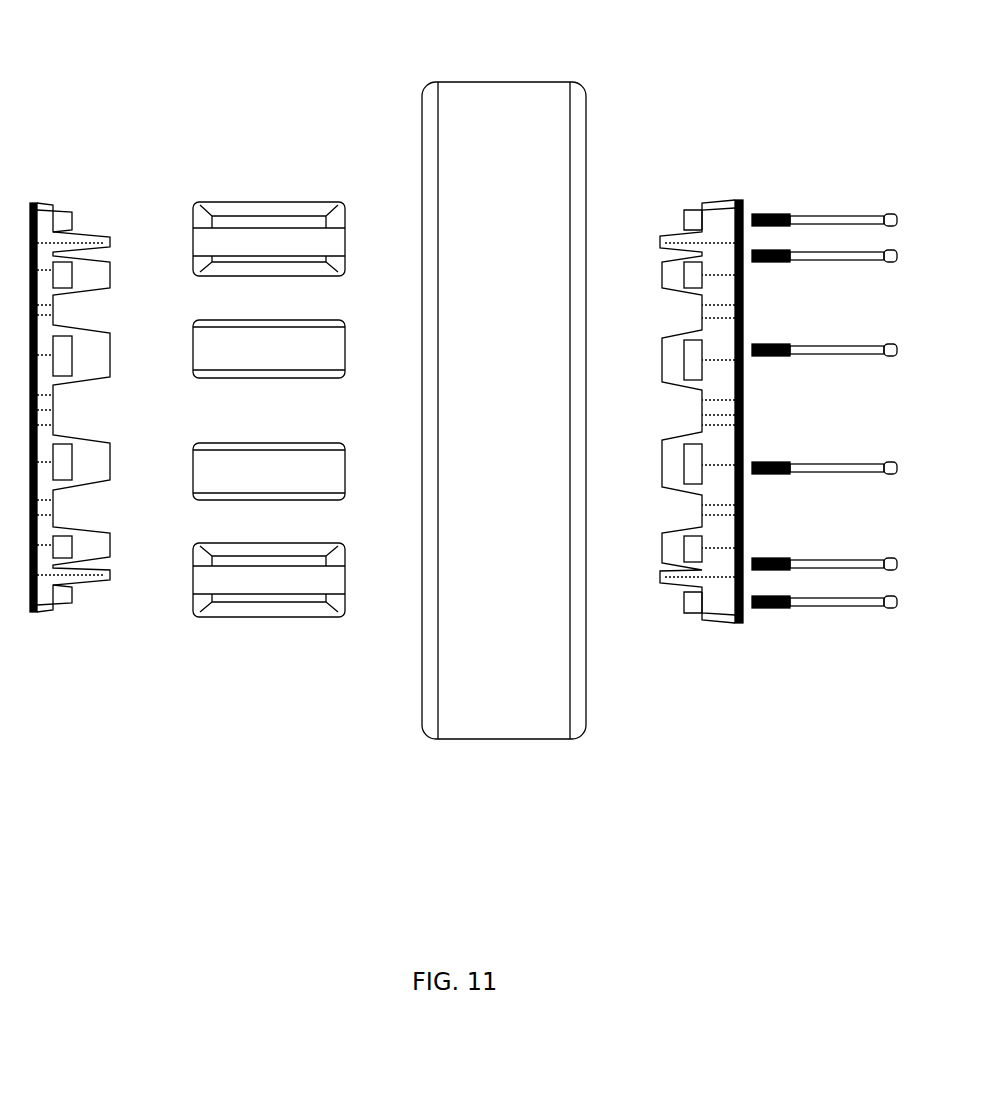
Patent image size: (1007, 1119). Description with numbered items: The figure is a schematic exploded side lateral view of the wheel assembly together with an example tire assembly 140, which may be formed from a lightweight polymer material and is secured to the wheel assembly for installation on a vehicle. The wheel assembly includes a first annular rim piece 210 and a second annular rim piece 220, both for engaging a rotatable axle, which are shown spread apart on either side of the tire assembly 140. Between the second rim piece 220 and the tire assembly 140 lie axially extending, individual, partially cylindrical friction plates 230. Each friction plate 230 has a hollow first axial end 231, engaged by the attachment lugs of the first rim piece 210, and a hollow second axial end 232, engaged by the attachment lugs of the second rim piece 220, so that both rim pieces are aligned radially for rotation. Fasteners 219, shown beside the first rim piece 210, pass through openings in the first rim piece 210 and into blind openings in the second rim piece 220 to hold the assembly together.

The tire assembly 140 is at (503, 102).
The first annular rim piece 210 is at (719, 200).
The fasteners 219 is at (806, 217).
The second annular rim piece 220 is at (48, 203).
The friction plates 230 is at (281, 427).
The first axial end 231 is at (269, 639).
The second axial end 232 is at (229, 617).